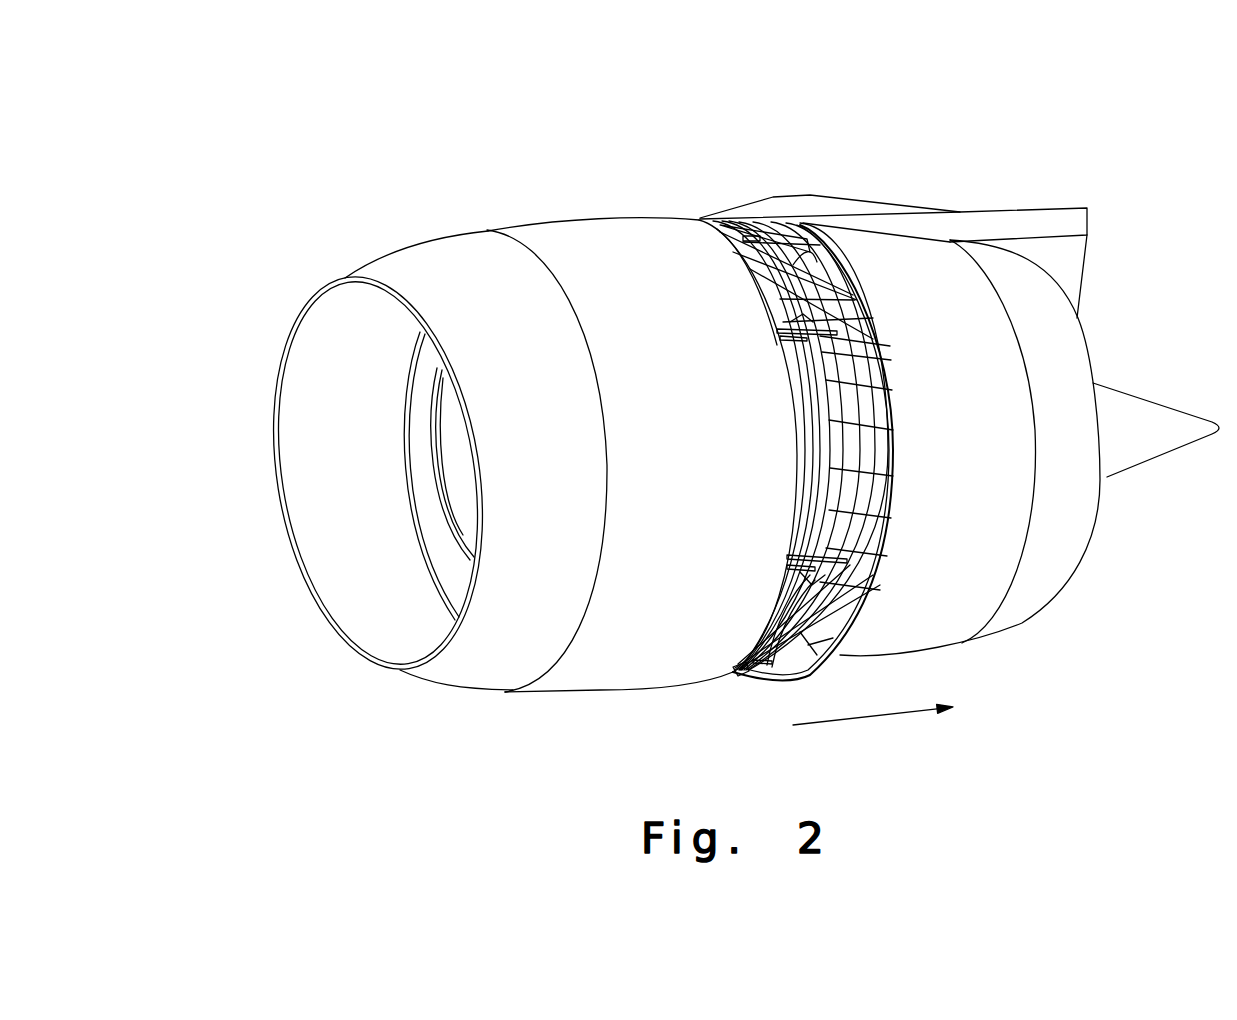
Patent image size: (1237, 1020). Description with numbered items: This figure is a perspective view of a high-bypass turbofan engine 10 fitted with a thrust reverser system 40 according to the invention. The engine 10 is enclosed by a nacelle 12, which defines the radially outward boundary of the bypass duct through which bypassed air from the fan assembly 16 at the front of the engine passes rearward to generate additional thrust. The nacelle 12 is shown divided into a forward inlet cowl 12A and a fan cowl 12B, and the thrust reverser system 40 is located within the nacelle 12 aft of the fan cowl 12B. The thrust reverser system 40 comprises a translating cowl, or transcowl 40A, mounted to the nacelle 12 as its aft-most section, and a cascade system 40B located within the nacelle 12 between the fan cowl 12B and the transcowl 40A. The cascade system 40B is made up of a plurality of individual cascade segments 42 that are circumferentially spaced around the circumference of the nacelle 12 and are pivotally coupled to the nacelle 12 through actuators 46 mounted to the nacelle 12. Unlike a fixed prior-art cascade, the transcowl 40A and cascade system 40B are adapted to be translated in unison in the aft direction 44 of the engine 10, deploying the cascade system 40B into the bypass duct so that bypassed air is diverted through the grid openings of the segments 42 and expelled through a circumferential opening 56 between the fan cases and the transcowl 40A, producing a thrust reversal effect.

The high-bypass turbofan engine 10 is at (784, 142).
The nacelle 12 is at (446, 165).
The inlet cowl 12A is at (391, 237).
The fan cowl 12B is at (598, 202).
The fan assembly 16 is at (284, 444).
The thrust reverser system 40 is at (882, 178).
The translating cowl (transcowl) 40A is at (943, 635).
The cascade system 40B is at (895, 315).
The cascade segment 42 is at (877, 637).
The aft direction 44 is at (870, 717).
The actuator 46 is at (797, 337).
The circumferential opening 56 is at (758, 683).